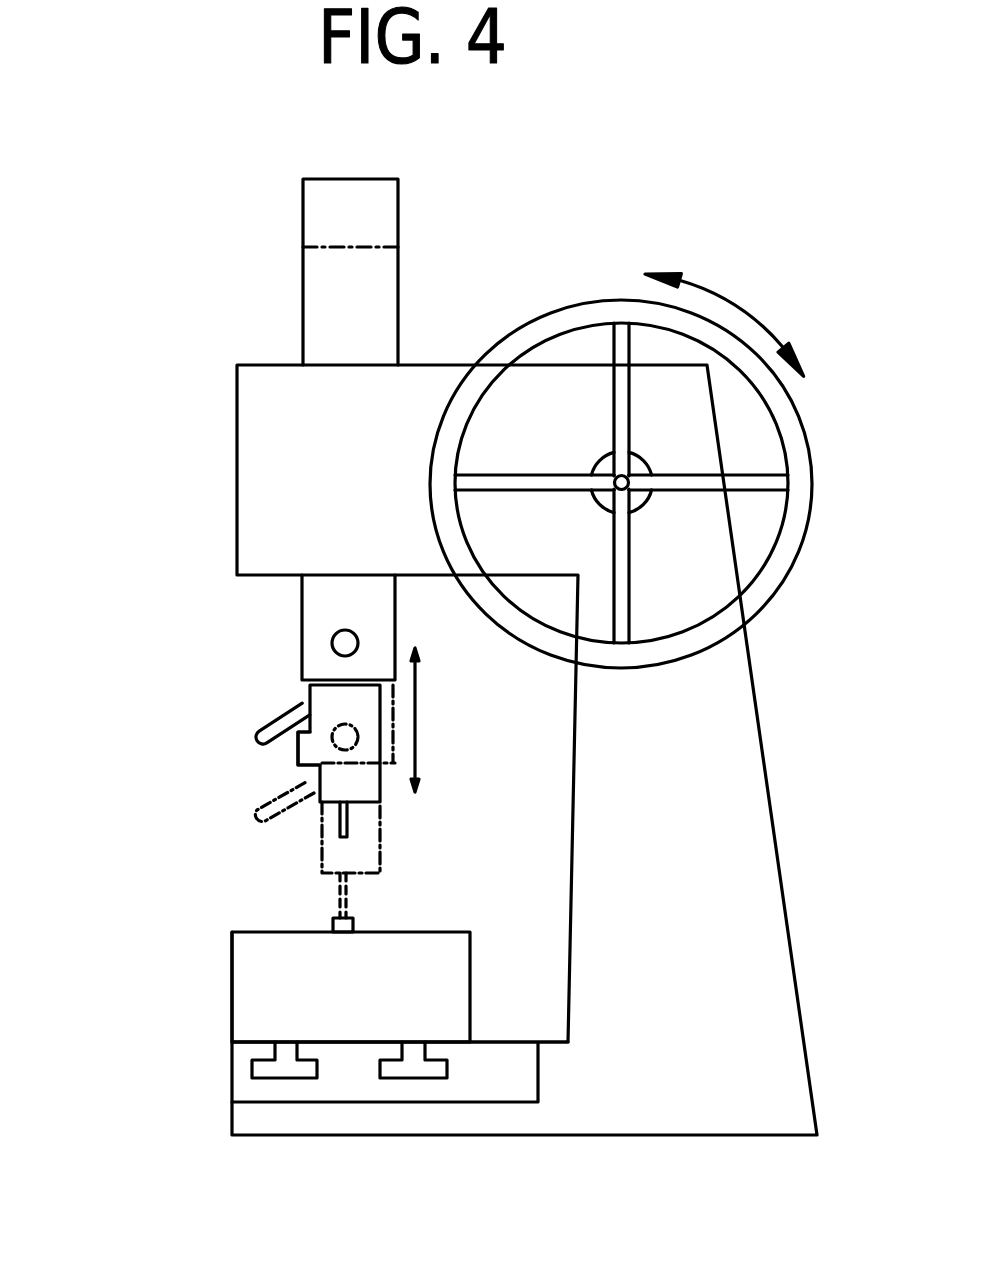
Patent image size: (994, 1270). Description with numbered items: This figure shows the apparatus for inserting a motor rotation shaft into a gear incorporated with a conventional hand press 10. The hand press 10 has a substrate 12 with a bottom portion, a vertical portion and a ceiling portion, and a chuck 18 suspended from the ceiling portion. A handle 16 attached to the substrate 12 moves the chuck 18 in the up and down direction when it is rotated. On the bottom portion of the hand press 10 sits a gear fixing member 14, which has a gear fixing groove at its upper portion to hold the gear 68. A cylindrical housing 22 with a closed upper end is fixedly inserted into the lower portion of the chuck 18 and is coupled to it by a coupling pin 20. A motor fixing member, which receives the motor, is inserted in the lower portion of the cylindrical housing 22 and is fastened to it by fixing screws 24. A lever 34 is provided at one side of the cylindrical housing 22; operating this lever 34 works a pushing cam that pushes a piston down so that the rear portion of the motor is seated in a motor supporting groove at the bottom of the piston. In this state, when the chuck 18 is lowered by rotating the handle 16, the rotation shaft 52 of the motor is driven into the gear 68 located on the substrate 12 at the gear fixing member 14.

The hand press 10 is at (208, 230).
The substrate 12 is at (243, 1067).
The gear fixing member 14 is at (244, 965).
The handle 16 is at (803, 487).
The chuck 18 is at (302, 593).
The coupling pin 20 is at (333, 643).
The cylindrical housing 22 is at (367, 745).
The fixing screws 24 is at (310, 770).
The lever 34 is at (265, 733).
The rotation shaft 52 is at (350, 833).
The gear 68 is at (333, 922).